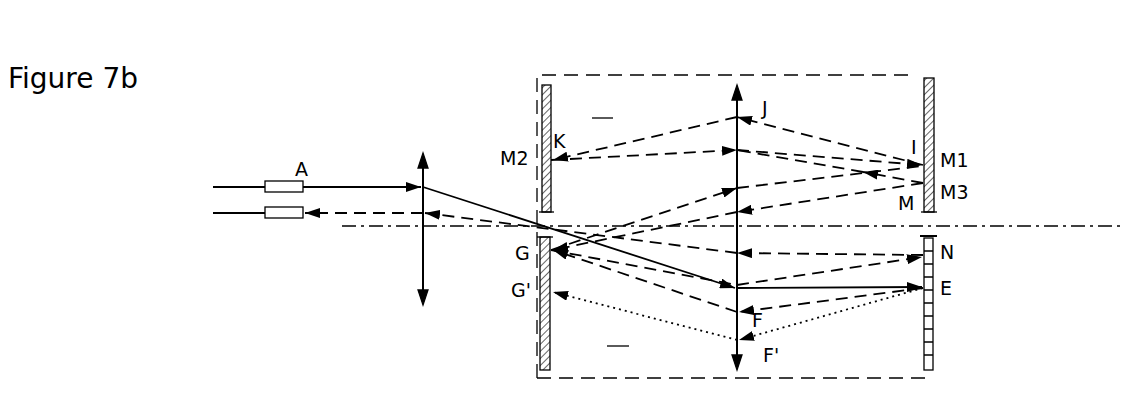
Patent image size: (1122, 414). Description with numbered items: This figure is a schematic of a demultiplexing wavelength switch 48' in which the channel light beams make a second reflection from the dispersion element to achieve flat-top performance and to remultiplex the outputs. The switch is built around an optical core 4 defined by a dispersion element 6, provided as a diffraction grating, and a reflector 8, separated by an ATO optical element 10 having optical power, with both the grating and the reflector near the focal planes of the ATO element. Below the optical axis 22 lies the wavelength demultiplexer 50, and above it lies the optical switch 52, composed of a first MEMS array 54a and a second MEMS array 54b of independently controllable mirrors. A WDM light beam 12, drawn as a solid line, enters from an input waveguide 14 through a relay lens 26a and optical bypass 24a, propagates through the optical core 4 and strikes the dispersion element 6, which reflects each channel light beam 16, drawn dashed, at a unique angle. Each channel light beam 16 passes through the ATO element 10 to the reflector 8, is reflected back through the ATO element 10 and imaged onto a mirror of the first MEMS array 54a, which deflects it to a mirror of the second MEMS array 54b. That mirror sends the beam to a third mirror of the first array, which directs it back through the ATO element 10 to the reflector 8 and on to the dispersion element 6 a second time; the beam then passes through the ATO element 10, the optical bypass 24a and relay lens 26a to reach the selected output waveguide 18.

The optical core 4 is at (585, 75).
The dispersion element 6 is at (935, 330).
The reflector 8 is at (540, 355).
The optical element 10 is at (735, 112).
The WDM light beam 12 is at (372, 186).
The input waveguide 14 is at (230, 186).
The channel light beam 16 is at (818, 305).
The output waveguide 18 is at (240, 214).
The optical axis 22 is at (357, 227).
The optical bypass 24a is at (532, 233).
The relay lens 26a is at (419, 258).
The wavelength switch 48' is at (738, 179).
The wavelength demultiplexer 50 is at (619, 336).
The optical switch 52 is at (604, 108).
The first MEMS array 54a is at (930, 115).
The second MEMS array 54b is at (545, 115).